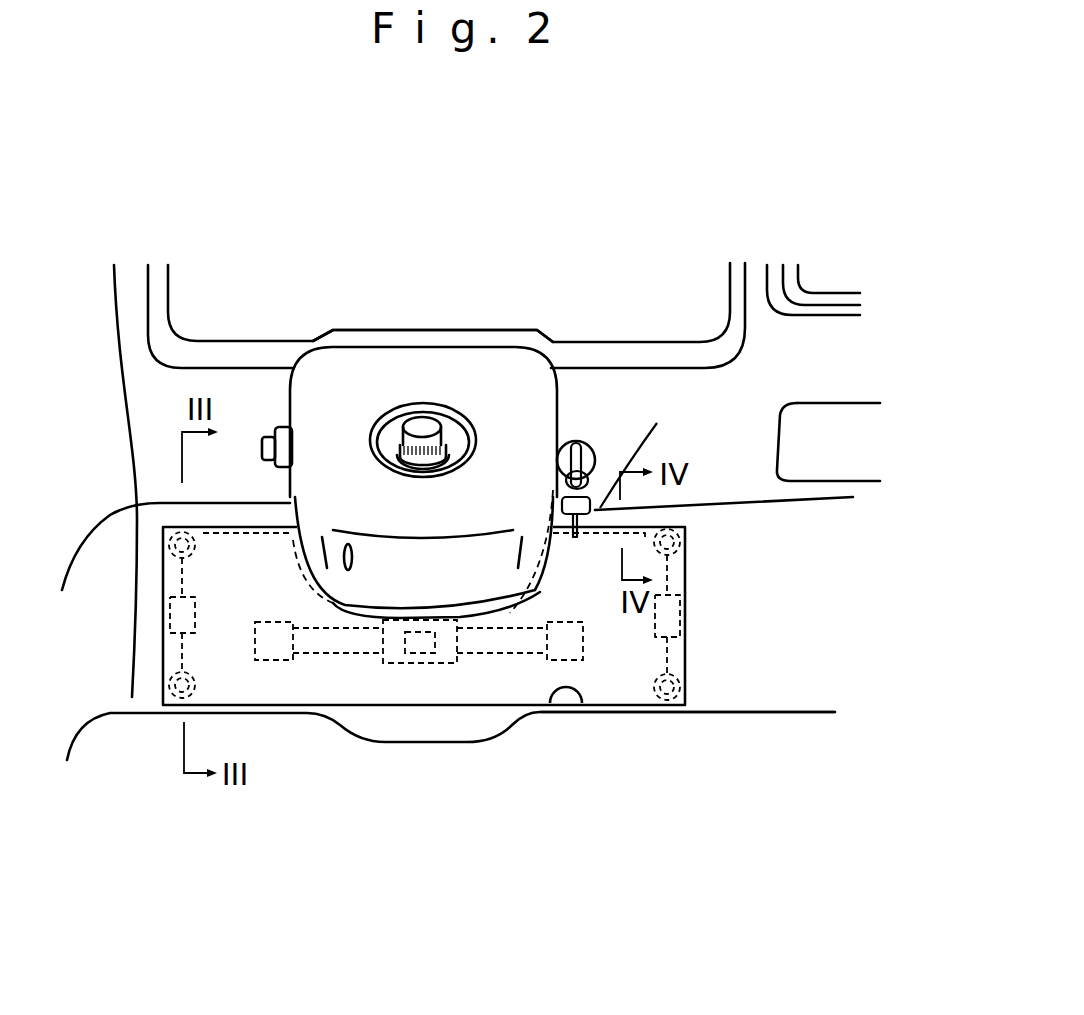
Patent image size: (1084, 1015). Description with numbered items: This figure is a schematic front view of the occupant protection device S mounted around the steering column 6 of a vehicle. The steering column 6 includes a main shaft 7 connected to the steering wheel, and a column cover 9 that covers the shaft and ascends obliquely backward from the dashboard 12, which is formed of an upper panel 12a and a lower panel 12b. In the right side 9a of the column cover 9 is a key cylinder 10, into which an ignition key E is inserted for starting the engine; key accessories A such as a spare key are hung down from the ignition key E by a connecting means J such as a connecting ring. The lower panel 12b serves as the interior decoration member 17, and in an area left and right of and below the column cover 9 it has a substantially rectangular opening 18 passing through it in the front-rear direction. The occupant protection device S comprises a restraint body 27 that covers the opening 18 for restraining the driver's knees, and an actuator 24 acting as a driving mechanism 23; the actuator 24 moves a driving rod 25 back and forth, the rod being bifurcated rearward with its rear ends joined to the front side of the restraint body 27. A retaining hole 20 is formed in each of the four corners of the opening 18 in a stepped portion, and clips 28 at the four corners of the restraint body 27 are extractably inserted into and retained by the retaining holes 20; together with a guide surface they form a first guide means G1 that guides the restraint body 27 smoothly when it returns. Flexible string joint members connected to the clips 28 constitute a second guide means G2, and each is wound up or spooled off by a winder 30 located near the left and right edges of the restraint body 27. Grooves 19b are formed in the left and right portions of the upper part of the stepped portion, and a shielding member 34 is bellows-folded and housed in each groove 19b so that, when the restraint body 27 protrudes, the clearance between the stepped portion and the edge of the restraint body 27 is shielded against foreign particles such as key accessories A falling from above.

The steering column 6 is at (423, 361).
The main shaft 7 is at (420, 425).
The column cover 9 is at (420, 419).
The right side of the column cover 9a is at (563, 400).
The key cylinder 10 is at (616, 404).
The instrument panel (dashboard) 12 is at (776, 534).
The upper panel 12a is at (857, 493).
The lower panel 12b is at (777, 520).
The interior decoration member 17 is at (780, 680).
The opening 18 is at (550, 703).
The grooves 19b is at (200, 532).
The retaining hole 20 is at (425, 645).
The driving mechanism 23 is at (427, 737).
The actuator 24 is at (417, 663).
The driving rod 25 is at (353, 640).
The restraint body 27 is at (273, 690).
The clips 28 is at (685, 532).
The winder 30 is at (193, 617).
The shielding member 34 is at (243, 527).
The ignition key E is at (582, 443).
The connecting means J is at (556, 482).
The key accessories A is at (638, 450).
The occupant protection device S is at (706, 678).
The first guide means G1 is at (738, 614).
The second guide means G2 is at (686, 660).